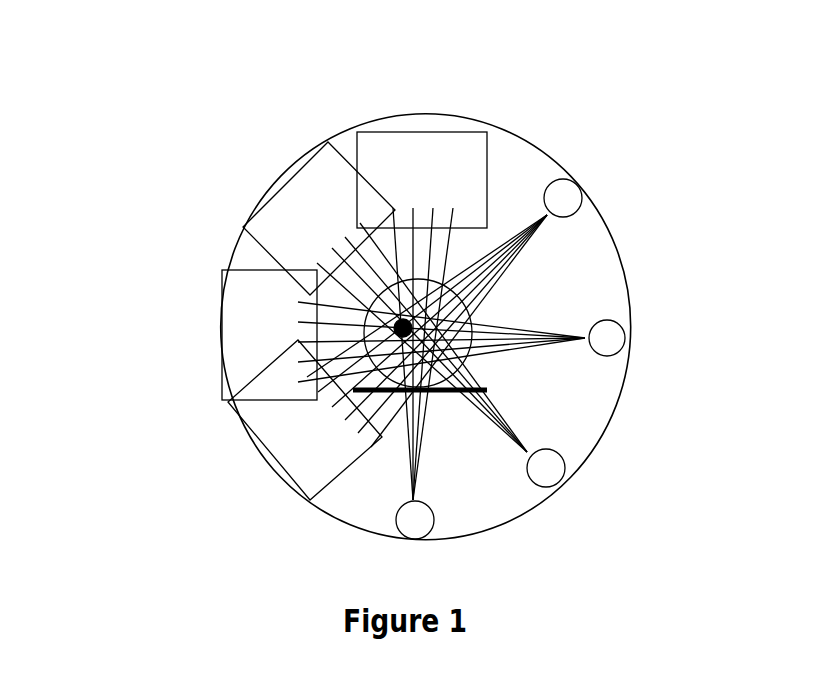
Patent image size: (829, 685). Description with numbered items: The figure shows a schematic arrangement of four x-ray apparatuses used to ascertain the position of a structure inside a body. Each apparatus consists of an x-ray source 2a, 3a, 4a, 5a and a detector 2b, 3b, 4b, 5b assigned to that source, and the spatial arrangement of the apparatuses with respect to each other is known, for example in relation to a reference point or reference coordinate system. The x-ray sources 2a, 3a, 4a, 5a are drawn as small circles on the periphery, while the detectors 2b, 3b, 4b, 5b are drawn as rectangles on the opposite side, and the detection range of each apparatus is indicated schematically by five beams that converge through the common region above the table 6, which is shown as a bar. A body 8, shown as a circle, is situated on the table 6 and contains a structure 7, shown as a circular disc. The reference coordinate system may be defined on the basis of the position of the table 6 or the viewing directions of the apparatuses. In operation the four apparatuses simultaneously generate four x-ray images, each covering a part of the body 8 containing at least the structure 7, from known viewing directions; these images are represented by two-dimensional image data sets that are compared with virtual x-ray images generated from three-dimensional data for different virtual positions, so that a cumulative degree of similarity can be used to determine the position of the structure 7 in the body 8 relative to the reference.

The x-ray source 2a is at (568, 193).
The x-ray source 3a is at (612, 335).
The x-ray source 4a is at (553, 472).
The x-ray source 5a is at (413, 526).
The detector 2b is at (242, 412).
The detector 3b is at (228, 317).
The detector 4b is at (253, 230).
The detector 5b is at (363, 142).
The table 6 is at (487, 390).
The structure 7 is at (412, 332).
The body 8 is at (470, 317).